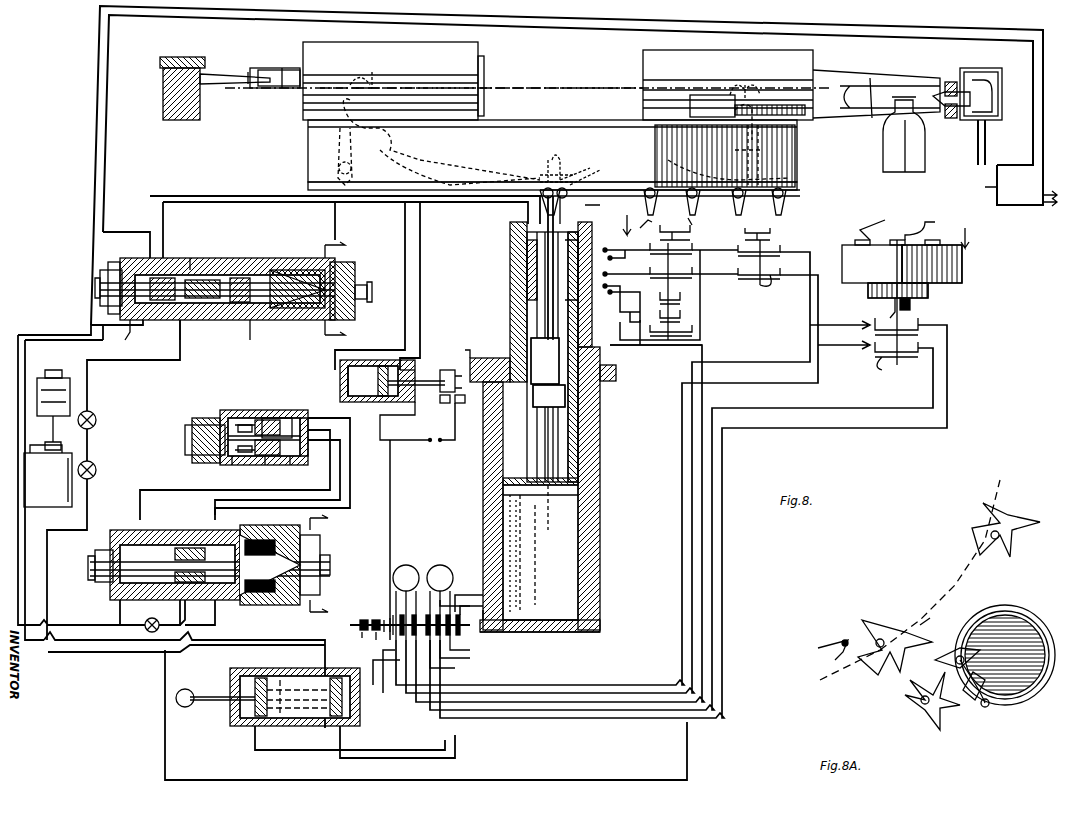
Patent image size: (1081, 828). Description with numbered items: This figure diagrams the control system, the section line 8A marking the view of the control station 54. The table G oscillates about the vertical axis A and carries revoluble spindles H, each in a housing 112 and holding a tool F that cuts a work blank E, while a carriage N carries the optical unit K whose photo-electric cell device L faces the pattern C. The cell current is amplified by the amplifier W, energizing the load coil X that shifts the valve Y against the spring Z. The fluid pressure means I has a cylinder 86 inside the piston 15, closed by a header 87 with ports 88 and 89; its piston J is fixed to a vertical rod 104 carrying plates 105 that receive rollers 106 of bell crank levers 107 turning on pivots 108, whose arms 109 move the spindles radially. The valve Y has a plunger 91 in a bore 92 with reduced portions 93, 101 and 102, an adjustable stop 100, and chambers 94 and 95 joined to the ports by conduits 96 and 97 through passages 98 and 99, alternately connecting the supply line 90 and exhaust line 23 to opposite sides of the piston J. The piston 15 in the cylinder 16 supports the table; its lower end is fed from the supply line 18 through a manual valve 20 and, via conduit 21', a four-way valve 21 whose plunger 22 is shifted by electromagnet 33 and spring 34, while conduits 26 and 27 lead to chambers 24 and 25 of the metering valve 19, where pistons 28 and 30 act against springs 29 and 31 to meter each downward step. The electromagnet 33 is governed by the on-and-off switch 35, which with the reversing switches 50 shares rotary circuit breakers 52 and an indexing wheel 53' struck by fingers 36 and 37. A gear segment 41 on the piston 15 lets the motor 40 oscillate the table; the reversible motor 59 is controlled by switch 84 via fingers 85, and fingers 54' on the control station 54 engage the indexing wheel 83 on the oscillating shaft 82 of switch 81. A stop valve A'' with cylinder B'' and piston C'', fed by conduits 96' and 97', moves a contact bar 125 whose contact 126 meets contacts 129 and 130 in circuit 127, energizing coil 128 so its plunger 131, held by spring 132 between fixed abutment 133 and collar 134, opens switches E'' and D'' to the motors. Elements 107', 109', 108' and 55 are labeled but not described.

In FIG. 8, the housing 112 is at (445, 52).
In FIG. 8, the pivot 108 is at (349, 156).
In FIG. 8, the arms 109 is at (381, 129).
In FIG. 8, the bell crank levers 107 is at (460, 162).
In FIG. 8, the rollers 106 is at (538, 178).
In FIG. 8, the vertically spaced plates 105 is at (575, 182).
In FIG. 8, the lever 107' is at (729, 163).
In FIG. 8, the cam follower 109' is at (731, 127).
In FIG. 8, the cam 108' is at (761, 155).
In FIG. 8, the conduit 96 is at (345, 215).
In FIG. 8, the conduit 97 is at (321, 221).
In FIG. 8, the conduit 96' is at (397, 286).
In FIG. 8, the conduit 97' is at (427, 286).
In FIG. 8, the reduced portion 101 is at (140, 258).
In FIG. 8, the valve chamber 94 is at (128, 262).
In FIG. 8, the adjustable stop 100 is at (106, 268).
In FIG. 8, the passage 98 is at (162, 258).
In FIG. 8, the passage 99 is at (185, 260).
In FIG. 8, the valve chamber 95 is at (210, 260).
In FIG. 8, the reduced portion 102 is at (248, 258).
In FIG. 8, the longitudinally extending bore 92 is at (140, 320).
In FIG. 8, the reduced portion 93 is at (182, 320).
In FIG. 8, the valve plunger 91 is at (215, 320).
In FIG. 8, the fluid pressure supply line 90 is at (155, 365).
In FIG. 8, the port 89 is at (527, 262).
In FIG. 8, the header 87 is at (540, 288).
In FIG. 8, the vertical rod 104 is at (575, 290).
In FIG. 8, the cylinder 86 is at (566, 398).
In FIG. 8, the piston 15 is at (600, 435).
In FIG. 8, the cylinder 16 is at (600, 560).
In FIG. 8, the gear segment 41 is at (476, 360).
In FIG. 8, the contact bar 125 is at (440, 380).
In FIG. 8, the contact 129 is at (395, 402).
In FIG. 8, the contact 126 is at (442, 403).
In FIG. 8, the contact 130 is at (455, 410).
In FIG. 8, the electric circuit 127 is at (395, 468).
In FIG. 8, the spring 29 is at (240, 420).
In FIG. 8, the metering valve 19 is at (262, 418).
In FIG. 8, the piston 28 is at (280, 418).
In FIG. 8, the chamber 24 is at (306, 418).
In FIG. 8, the conduit 27 is at (175, 490).
In FIG. 8, the spring 31 is at (232, 460).
In FIG. 8, the piston 30 is at (270, 458).
In FIG. 8, the chamber 25 is at (292, 458).
In FIG. 8, the conduit 26 is at (287, 469).
In FIG. 8, the four-way valve 21 is at (209, 554).
In FIG. 8, the plunger 22 is at (192, 545).
In FIG. 8, the exhaust line 23 is at (120, 608).
In FIG. 8, the conduit 21' is at (197, 612).
In FIG. 8, the spring 34 is at (262, 600).
In FIG. 8, the electromagnet 33 is at (285, 600).
In FIG. 8, the fluid pressure supply line 18 is at (110, 645).
In FIG. 8, the valve 20 is at (262, 728).
In FIG. 8, the reversible electric motor 59 is at (404, 565).
In FIG. 8A, the reversible electric motor 59 is at (876, 655).
In FIG. 8, the electric motor 40 is at (441, 565).
In FIG. 8, the spring 132 is at (370, 618).
In FIG. 8, the fixed abutment 133 is at (350, 625).
In FIG. 8, the collar 134 is at (370, 632).
In FIG. 8, the coil 128 is at (385, 632).
In FIG. 8, the plunger 131 is at (461, 654).
In FIG. 8, the finger 36 is at (639, 229).
In FIG. 8A, the finger 36 is at (831, 659).
In FIG. 8, the indexing wheel 53' is at (675, 221).
In FIG. 8A, the indexing wheel 53' is at (895, 647).
In FIG. 8, the finger 37 is at (690, 218).
In FIG. 8A, the finger 37 is at (932, 616).
In FIG. 8, the fingers 85 is at (742, 213).
In FIG. 8A, the fingers 85 is at (1000, 502).
In FIG. 8, the port 88 is at (618, 284).
In FIG. 8, the switches 50 is at (647, 291).
In FIG. 8, the rotary circuit breakers 52 is at (680, 290).
In FIG. 8, the on-and-off switch 84 is at (772, 285).
In FIG. 8, the on-and-off switch 35 is at (660, 345).
In FIG. 8, the fingers 54' is at (897, 223).
In FIG. 8A, the fingers 54' is at (952, 694).
In FIG. 8, the indexing wheel 83 is at (891, 269).
In FIG. 8A, the indexing wheel 83 is at (940, 710).
In FIG. 8, the control station 54 is at (929, 271).
In FIG. 8A, the control station 54 is at (1005, 649).
In FIG. 8, the contact 55 is at (912, 302).
In FIG. 8, the oscillating shaft 82 is at (905, 322).
In FIG. 8A, the oscillating shaft 82 is at (905, 698).
In FIG. 8, the on-and-off switch 81 is at (885, 357).
In FIG. 8, the section line 8A is at (797, 224).
In FIG. 8, the work blank E is at (190, 88).
In FIG. 8, the tool F is at (228, 70).
In FIG. 8, the revoluble spindle H is at (285, 65).
In FIG. 8, the table G is at (308, 138).
In FIG. 8A, the table G is at (940, 583).
In FIG. 8, the carriage N is at (890, 75).
In FIG. 8, the optical unit K is at (953, 80).
In FIG. 8, the photo-electric cell device L is at (1002, 100).
In FIG. 8, the model C is at (913, 134).
In FIG. 8, the amplifier W is at (1012, 193).
In FIG. 8, the load coil X is at (290, 262).
In FIG. 8, the valve Y is at (190, 258).
In FIG. 8, the spring Z is at (250, 320).
In FIG. 8, the stop valve A'' is at (392, 362).
In FIG. 8, the cylinder B'' is at (356, 359).
In FIG. 8, the piston C'' is at (406, 357).
In FIG. 8, the piston J is at (530, 350).
In FIG. 8, the fluid pressure means I is at (575, 318).
In FIG. 8, the vertical axis A is at (561, 549).
In FIG. 8, the switch D'' is at (415, 613).
In FIG. 8, the switch E'' is at (454, 610).